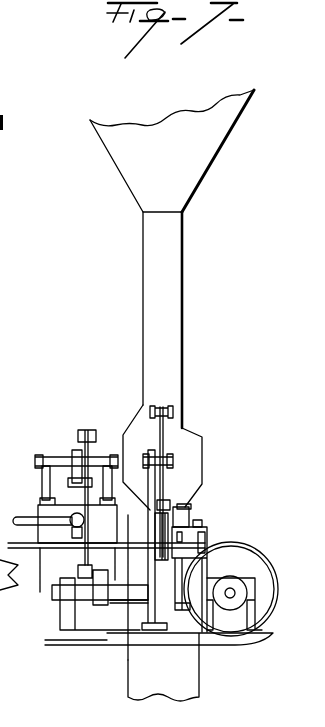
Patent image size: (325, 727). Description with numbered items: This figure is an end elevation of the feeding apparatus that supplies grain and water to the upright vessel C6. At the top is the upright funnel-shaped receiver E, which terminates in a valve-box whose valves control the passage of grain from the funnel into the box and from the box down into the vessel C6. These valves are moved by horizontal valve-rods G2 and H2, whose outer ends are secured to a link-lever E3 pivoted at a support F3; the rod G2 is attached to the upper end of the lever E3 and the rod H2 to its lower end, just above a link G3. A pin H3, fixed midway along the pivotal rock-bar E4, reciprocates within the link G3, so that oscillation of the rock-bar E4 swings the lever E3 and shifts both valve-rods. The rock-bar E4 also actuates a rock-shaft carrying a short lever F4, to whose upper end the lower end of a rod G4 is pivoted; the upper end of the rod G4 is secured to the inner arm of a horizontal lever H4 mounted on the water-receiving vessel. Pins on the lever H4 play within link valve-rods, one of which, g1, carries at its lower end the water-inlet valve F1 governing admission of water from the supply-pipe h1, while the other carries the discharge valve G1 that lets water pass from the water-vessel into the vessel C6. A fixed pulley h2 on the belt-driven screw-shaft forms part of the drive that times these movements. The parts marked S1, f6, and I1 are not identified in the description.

The funnel-shaped receiver E is at (172, 259).
The link-lever E3 is at (164, 474).
The rock-bar E4 is at (190, 560).
The valve-rod G2 is at (174, 411).
The water-discharge valve G1 is at (171, 459).
The link G3 is at (149, 521).
The rod G4 is at (106, 537).
The pivot support F3 is at (148, 458).
The short lever F4 is at (109, 608).
The water-inlet valve F1 is at (70, 528).
The valve-rod H2 is at (186, 504).
The pin H3 is at (150, 537).
The horizontal lever H4 is at (78, 440).
The slide S1 is at (93, 455).
The link valve-rod g1 is at (72, 503).
The supply-pipe h1 is at (40, 513).
The fixed pulley h2 is at (231, 589).
The block f6 is at (187, 517).
The ledge I1 is at (129, 596).
The upright vessel C6 is at (159, 667).